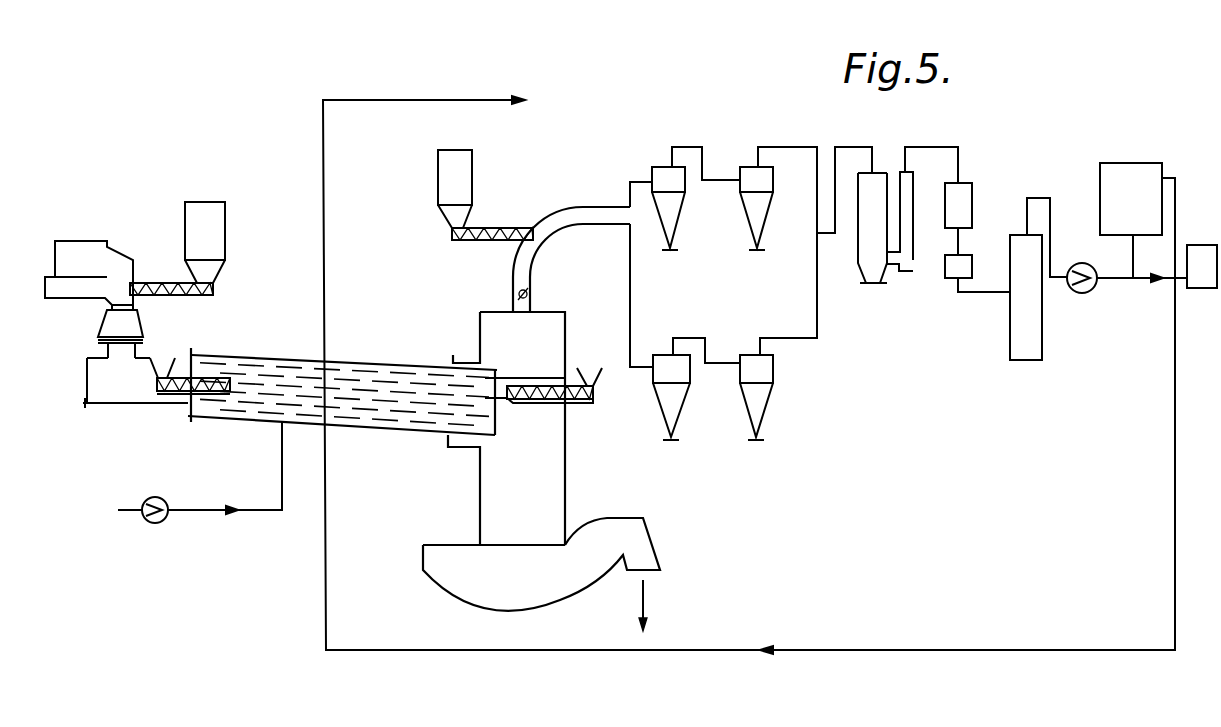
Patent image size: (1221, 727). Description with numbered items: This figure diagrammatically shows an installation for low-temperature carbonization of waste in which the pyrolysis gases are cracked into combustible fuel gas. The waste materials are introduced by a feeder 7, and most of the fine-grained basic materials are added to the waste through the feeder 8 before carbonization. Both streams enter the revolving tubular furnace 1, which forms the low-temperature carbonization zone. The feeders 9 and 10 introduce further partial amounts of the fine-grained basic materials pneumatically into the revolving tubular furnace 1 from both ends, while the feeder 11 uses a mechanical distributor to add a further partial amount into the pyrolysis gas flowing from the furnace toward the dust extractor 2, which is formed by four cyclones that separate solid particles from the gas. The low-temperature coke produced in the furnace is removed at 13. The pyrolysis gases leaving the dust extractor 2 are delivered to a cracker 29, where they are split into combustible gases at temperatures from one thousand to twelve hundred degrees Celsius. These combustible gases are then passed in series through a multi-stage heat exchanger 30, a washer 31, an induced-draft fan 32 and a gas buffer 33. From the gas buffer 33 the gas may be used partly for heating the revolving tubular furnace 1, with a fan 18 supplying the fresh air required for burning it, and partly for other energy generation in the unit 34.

The revolving tubular furnace 1 is at (384, 366).
The dust extractor 2 is at (748, 352).
The feeder 7 is at (73, 292).
The feeder 8 is at (207, 203).
The feeder 9 is at (162, 364).
The feeder 10 is at (586, 380).
The feeder 11 is at (453, 152).
The low-temperature coke removal 13 is at (646, 606).
The fan 18 is at (157, 523).
The cracker 29 is at (876, 283).
The multi-stage heat exchanger 30 is at (917, 266).
The washer 31 is at (1027, 360).
The induced-draft fan 32 is at (1080, 293).
The gas buffer 33 is at (1125, 170).
The unit 34 is at (1197, 245).